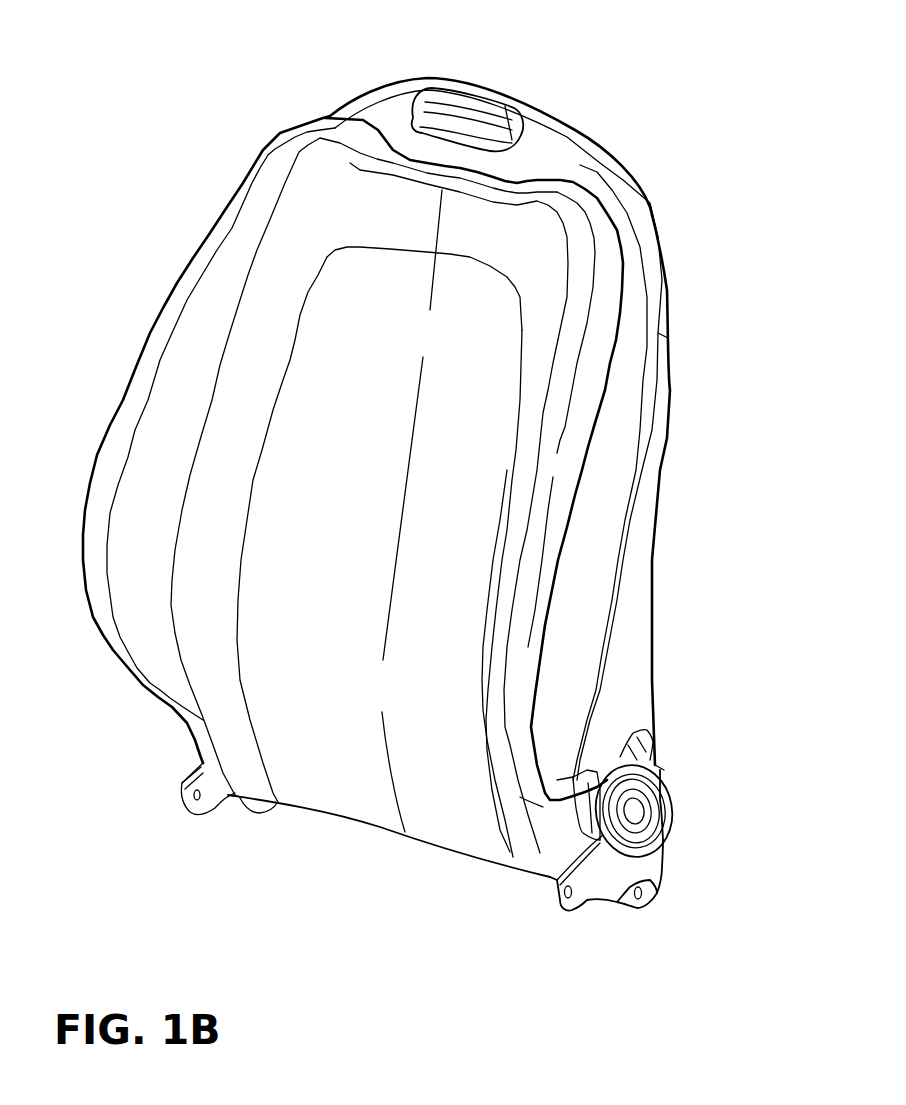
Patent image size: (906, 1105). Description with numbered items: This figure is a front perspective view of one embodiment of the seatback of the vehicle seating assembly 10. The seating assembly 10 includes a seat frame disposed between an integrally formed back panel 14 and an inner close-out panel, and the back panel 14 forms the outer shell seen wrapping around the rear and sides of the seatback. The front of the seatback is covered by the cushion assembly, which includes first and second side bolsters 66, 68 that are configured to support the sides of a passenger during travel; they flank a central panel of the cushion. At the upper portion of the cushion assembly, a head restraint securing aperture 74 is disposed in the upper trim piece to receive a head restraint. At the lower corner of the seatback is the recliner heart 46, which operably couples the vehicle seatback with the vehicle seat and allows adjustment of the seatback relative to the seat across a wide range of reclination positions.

The vehicle seating assembly 10 is at (713, 192).
The back panel 14 is at (667, 438).
The recliner heart 46 is at (638, 815).
The first side bolster 66 is at (128, 423).
The second side bolster 68 is at (580, 573).
The head restraint securing aperture 74 is at (457, 168).